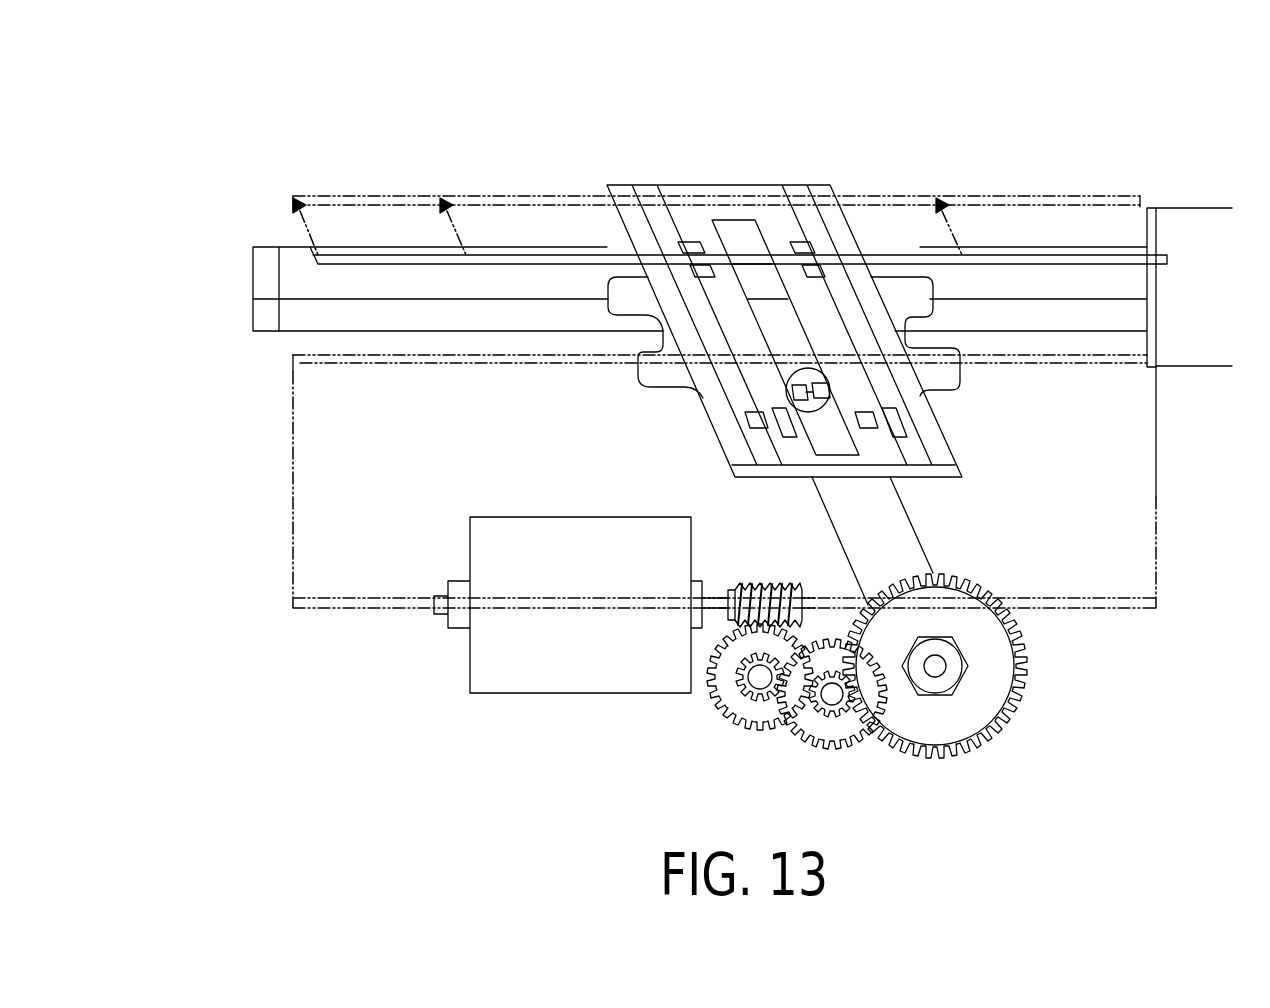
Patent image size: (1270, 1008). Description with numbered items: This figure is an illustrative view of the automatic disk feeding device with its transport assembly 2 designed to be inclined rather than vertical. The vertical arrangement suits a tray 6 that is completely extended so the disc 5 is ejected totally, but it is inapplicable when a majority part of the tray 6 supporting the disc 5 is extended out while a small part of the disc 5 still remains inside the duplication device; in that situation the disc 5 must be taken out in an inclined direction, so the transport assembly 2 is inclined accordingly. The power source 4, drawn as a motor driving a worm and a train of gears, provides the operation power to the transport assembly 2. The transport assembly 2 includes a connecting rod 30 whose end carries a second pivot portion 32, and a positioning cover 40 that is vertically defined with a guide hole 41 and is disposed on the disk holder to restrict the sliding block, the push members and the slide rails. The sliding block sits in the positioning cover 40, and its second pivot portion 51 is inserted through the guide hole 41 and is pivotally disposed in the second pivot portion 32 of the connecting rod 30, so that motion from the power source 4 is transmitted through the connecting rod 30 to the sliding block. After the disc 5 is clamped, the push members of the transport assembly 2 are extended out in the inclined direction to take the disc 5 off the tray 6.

The transport assembly 2 is at (676, 186).
The power source 4 is at (515, 684).
The disc 5 is at (393, 257).
The tray 6 is at (253, 290).
The connecting rod 30 is at (907, 538).
The second pivot portion 32 is at (1028, 391).
The positioning cover 40 is at (933, 448).
The guide hole 41 is at (740, 235).
The second pivot portion 51 is at (830, 384).